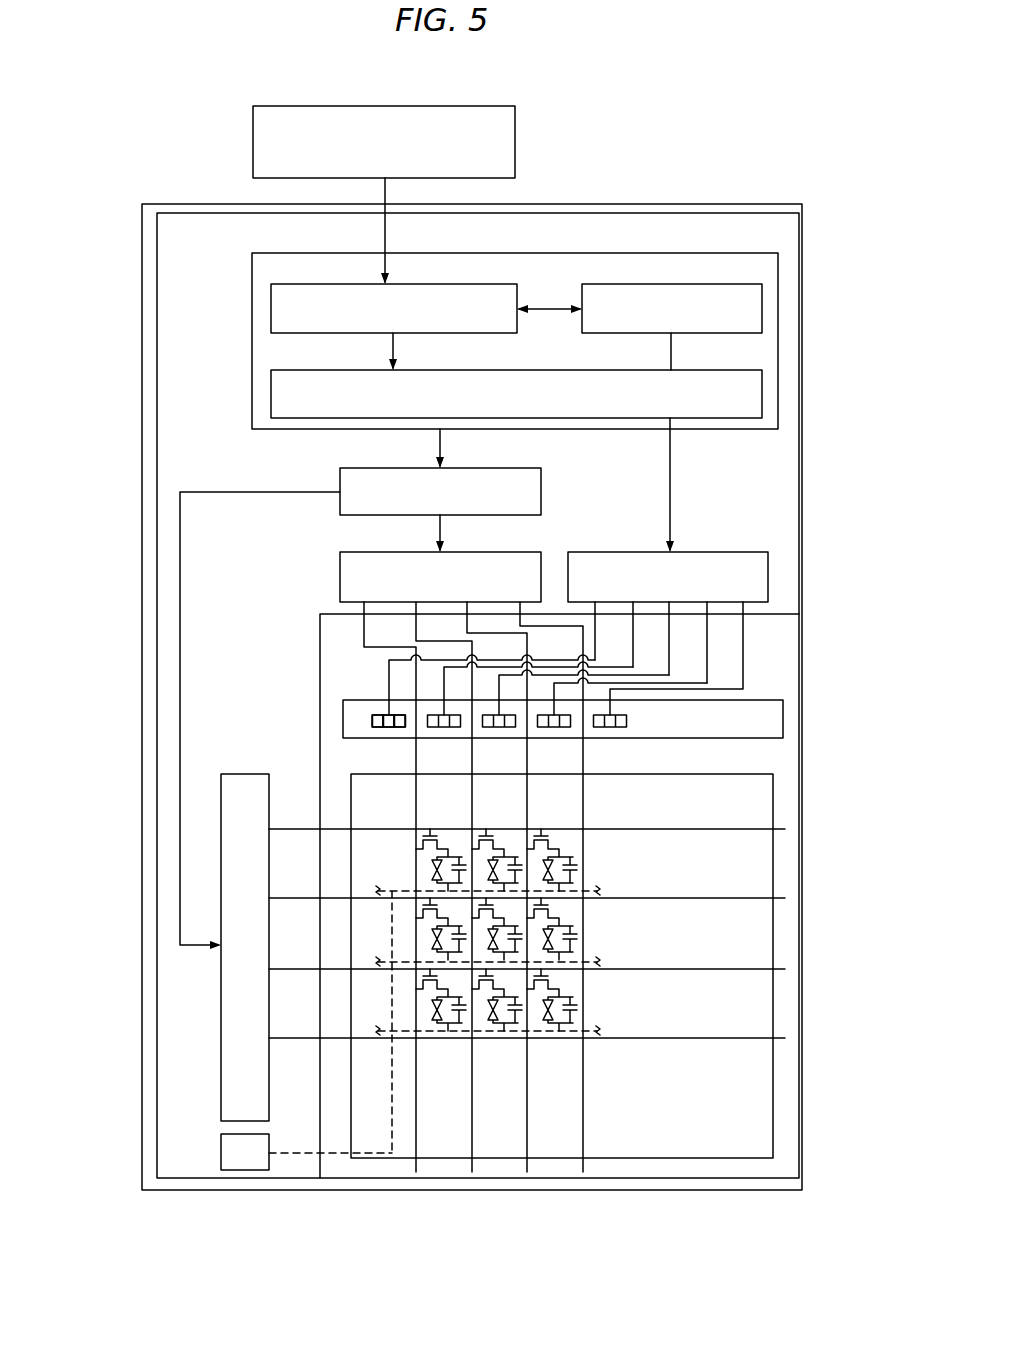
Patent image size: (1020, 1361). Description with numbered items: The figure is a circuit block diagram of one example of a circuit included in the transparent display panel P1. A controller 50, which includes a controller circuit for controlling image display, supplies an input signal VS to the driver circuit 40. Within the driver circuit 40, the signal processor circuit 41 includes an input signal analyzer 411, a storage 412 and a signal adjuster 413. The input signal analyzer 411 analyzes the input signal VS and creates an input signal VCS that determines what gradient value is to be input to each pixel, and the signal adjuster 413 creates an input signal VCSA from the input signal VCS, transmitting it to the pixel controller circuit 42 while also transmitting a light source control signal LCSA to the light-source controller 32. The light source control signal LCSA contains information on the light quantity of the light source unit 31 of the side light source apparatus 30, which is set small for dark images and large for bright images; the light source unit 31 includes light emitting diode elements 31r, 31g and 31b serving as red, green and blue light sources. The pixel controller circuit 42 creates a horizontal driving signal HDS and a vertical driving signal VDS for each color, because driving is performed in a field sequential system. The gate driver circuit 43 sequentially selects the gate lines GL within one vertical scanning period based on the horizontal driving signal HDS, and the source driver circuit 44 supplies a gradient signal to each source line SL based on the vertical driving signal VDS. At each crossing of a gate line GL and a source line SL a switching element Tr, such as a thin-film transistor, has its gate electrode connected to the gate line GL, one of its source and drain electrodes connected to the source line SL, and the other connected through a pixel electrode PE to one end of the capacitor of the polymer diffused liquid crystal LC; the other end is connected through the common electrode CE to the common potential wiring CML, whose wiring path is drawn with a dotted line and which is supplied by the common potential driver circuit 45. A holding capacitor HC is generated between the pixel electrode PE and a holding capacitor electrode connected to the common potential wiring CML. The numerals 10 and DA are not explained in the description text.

The display panel 10 is at (802, 870).
The side light source apparatus 30 is at (783, 722).
The light source unit 31 is at (245, 652).
The light emitting diode element 31r is at (400, 716).
The light emitting diode element 31g is at (388, 715).
The light emitting diode element 31b is at (377, 718).
The light-source controller 32 is at (768, 578).
The driver circuit 40 is at (708, 212).
The signal processor circuit 41 is at (778, 262).
The input signal analyzer 411 is at (271, 308).
The storage 412 is at (762, 310).
The signal adjuster 413 is at (762, 398).
The pixel controller circuit 42 is at (340, 486).
The gate driver circuit 43 is at (221, 1085).
The source driver circuit 44 is at (340, 576).
The common potential driver circuit 45 is at (221, 1155).
The controller 50 is at (515, 130).
The display panel P1 is at (786, 158).
The display area DA is at (773, 793).
The gate line GL is at (665, 829).
The source line SL is at (418, 1172).
The common electrode CE is at (410, 894).
The common potential wiring CML is at (332, 1156).
The switching element Tr is at (424, 838).
The pixel electrode PE is at (437, 845).
The holding capacitor HC is at (464, 860).
The polymer diffused liquid crystal LC is at (426, 868).
The horizontal driving signal HDS is at (180, 886).
The input signal VS is at (385, 228).
The input signal VCS is at (393, 348).
The input signal VCSA is at (440, 443).
The vertical driving signal VDS is at (440, 530).
The light source control signal LCSA is at (670, 505).